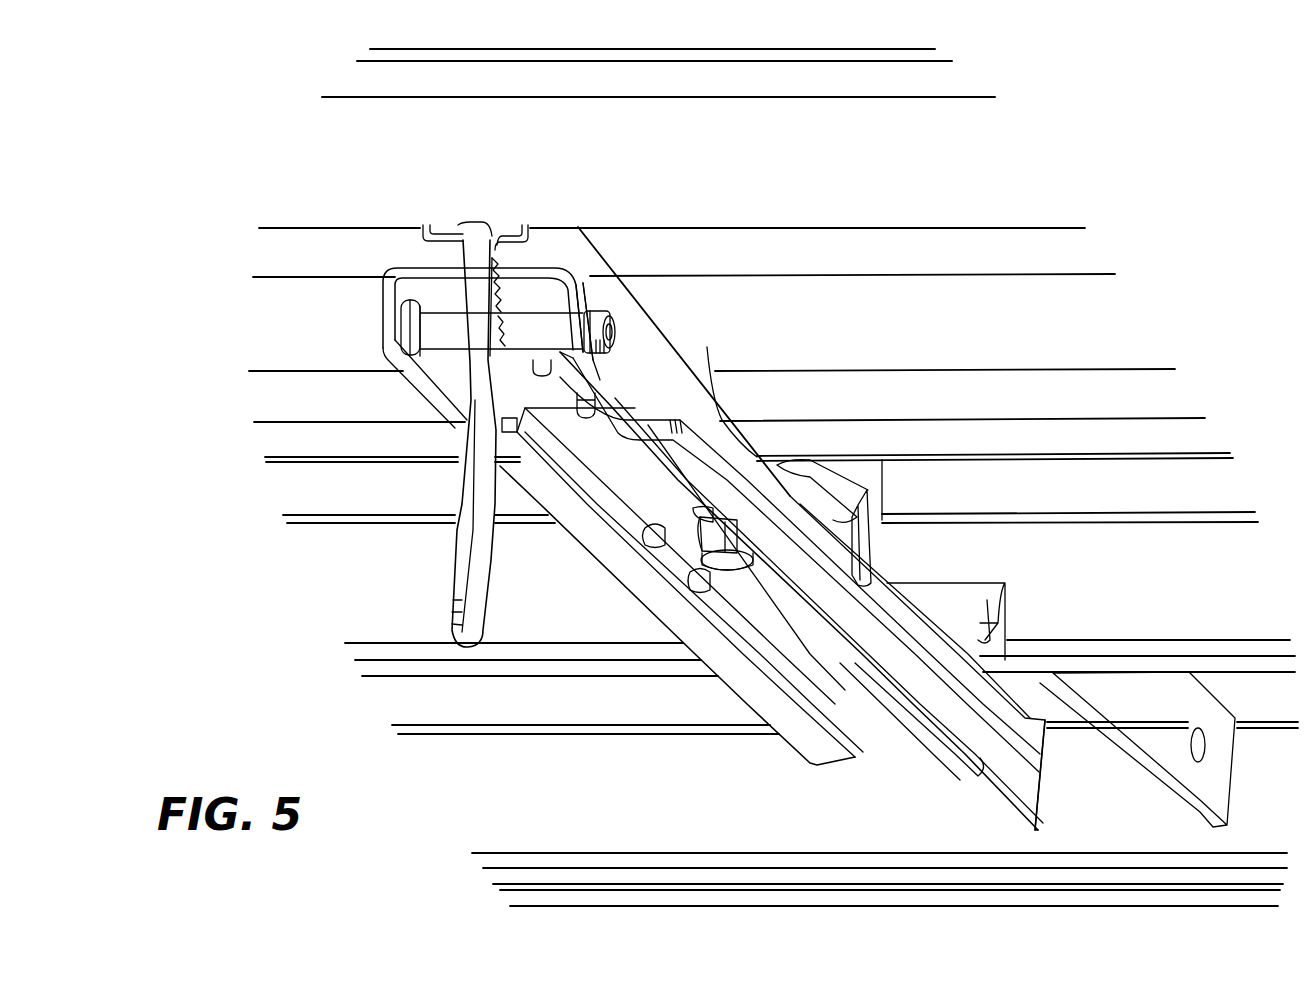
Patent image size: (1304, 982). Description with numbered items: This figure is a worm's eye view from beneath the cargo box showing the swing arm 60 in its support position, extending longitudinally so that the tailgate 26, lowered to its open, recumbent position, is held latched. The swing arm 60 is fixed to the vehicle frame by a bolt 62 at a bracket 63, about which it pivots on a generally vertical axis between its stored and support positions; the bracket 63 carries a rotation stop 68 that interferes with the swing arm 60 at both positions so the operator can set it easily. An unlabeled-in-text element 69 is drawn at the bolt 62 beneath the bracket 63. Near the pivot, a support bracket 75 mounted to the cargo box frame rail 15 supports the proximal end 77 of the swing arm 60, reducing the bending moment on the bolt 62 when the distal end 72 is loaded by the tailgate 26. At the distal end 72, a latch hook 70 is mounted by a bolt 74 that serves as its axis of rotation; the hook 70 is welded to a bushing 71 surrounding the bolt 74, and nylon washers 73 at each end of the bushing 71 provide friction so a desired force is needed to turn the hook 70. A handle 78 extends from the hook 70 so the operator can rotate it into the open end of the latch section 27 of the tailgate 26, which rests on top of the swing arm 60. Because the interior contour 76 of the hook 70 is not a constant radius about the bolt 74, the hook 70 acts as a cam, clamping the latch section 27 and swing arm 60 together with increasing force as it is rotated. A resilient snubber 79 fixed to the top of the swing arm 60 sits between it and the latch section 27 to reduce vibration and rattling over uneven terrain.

The cargo box frame rail 15 is at (1207, 613).
The tailgate 26 is at (856, 88).
The latch section 27 is at (672, 327).
The swing arm 60 is at (772, 440).
The bolt 62 is at (722, 568).
The bracket 63 is at (848, 487).
The rotation stop 68 is at (875, 548).
The nut 69 is at (640, 530).
The latch hook 70 is at (480, 258).
The bushing 71 is at (535, 312).
The distal end 72 is at (398, 381).
The nylon washers 73 is at (400, 303).
The bolt 74 is at (615, 330).
The support bracket 75 is at (990, 607).
The interior contour 76 is at (513, 265).
The proximal end 77 is at (802, 750).
The handle 78 is at (452, 576).
The snubber 79 is at (573, 380).